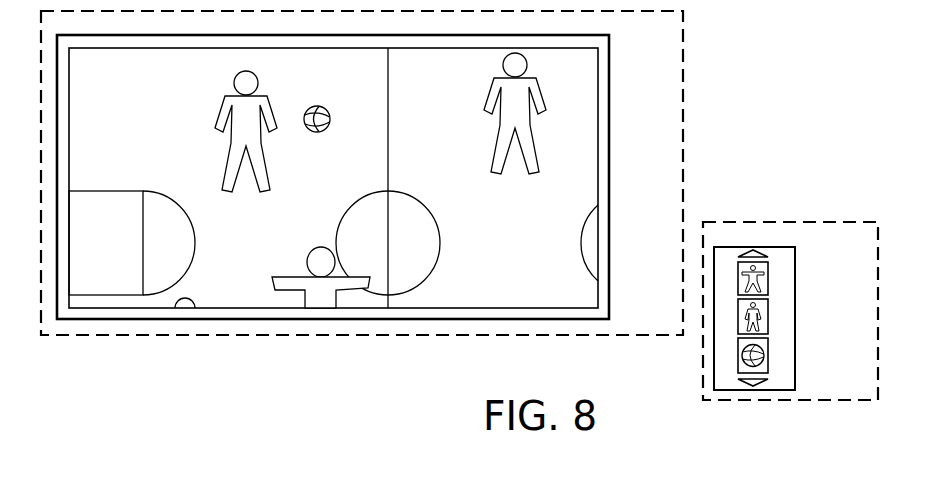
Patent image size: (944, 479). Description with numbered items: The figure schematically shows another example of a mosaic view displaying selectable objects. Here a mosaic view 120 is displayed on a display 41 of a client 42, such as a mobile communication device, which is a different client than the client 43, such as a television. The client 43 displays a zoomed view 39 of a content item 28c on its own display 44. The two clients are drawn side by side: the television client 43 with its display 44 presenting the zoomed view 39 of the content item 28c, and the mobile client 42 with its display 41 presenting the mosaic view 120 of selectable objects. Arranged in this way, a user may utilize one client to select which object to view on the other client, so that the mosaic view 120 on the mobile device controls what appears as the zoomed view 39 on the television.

The client 43 is at (683, 38).
The display 44 is at (609, 185).
The content item 28c is at (598, 138).
The zoomed view 39 is at (577, 111).
The client 42 is at (752, 222).
The display 41 is at (795, 316).
The mosaic view 120 is at (777, 275).